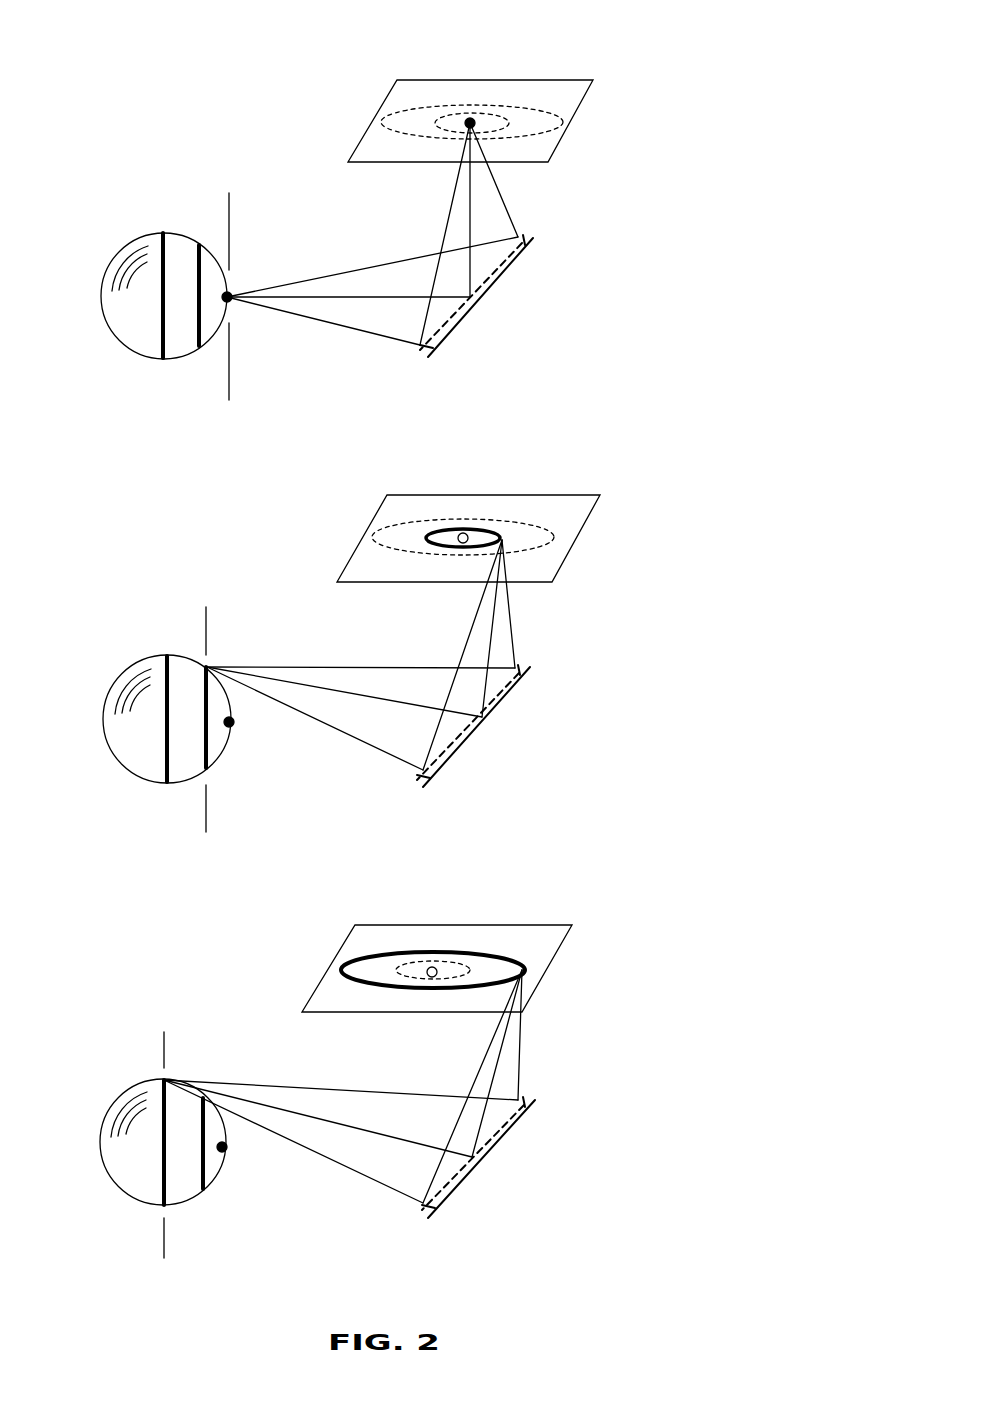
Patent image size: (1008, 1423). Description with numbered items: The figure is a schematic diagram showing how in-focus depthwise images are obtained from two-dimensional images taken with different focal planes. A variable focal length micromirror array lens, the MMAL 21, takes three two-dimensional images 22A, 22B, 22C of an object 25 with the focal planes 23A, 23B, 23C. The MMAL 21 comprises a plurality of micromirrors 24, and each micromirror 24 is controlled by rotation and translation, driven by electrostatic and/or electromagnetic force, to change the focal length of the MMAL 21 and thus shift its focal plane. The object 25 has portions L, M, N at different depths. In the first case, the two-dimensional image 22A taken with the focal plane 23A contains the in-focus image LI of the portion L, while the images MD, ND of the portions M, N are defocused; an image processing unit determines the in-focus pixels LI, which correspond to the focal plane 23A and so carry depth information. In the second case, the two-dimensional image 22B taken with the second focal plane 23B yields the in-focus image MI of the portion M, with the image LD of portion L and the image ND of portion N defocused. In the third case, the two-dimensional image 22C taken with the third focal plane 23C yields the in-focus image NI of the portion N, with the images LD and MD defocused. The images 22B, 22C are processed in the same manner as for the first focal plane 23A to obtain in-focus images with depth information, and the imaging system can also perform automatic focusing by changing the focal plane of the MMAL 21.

The object 25 is at (143, 228).
The focal plane 23A is at (229, 276).
The second focal plane 23B is at (211, 698).
The third focal plane 23C is at (167, 1125).
The portion of object L is at (240, 283).
The portion of object M is at (198, 350).
The portion of object N is at (160, 362).
The MMAL 21 is at (465, 333).
The micromirror 24 is at (418, 348).
The two-dimensional image 22A is at (580, 147).
The two-dimensional image 22B is at (580, 560).
The two-dimensional image 22C is at (563, 973).
The in-focus image LI is at (463, 120).
The defocused image of portion L LD is at (473, 530).
The defocused image of portion M MD is at (480, 112).
The in-focus image of portion M MI is at (427, 537).
The defocused image of portion N ND is at (540, 107).
The in-focus image of portion N NI is at (350, 957).